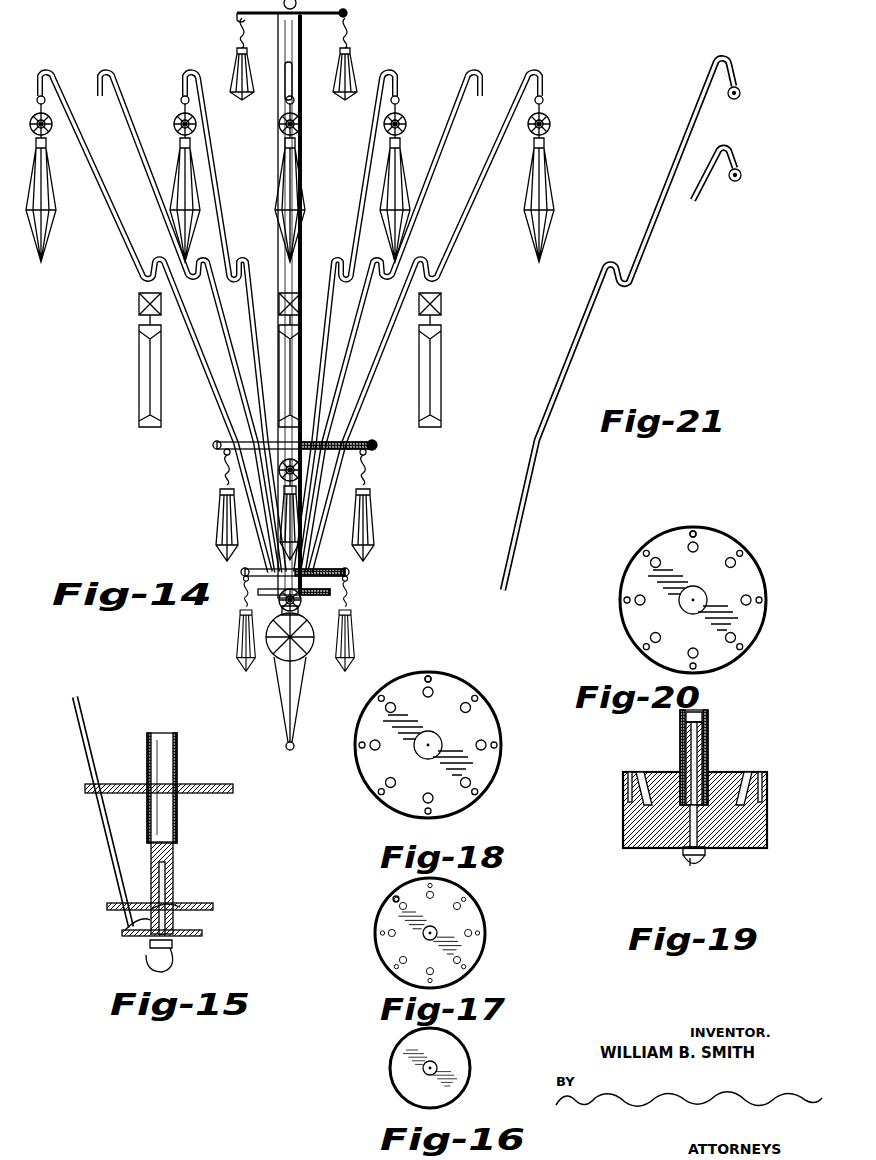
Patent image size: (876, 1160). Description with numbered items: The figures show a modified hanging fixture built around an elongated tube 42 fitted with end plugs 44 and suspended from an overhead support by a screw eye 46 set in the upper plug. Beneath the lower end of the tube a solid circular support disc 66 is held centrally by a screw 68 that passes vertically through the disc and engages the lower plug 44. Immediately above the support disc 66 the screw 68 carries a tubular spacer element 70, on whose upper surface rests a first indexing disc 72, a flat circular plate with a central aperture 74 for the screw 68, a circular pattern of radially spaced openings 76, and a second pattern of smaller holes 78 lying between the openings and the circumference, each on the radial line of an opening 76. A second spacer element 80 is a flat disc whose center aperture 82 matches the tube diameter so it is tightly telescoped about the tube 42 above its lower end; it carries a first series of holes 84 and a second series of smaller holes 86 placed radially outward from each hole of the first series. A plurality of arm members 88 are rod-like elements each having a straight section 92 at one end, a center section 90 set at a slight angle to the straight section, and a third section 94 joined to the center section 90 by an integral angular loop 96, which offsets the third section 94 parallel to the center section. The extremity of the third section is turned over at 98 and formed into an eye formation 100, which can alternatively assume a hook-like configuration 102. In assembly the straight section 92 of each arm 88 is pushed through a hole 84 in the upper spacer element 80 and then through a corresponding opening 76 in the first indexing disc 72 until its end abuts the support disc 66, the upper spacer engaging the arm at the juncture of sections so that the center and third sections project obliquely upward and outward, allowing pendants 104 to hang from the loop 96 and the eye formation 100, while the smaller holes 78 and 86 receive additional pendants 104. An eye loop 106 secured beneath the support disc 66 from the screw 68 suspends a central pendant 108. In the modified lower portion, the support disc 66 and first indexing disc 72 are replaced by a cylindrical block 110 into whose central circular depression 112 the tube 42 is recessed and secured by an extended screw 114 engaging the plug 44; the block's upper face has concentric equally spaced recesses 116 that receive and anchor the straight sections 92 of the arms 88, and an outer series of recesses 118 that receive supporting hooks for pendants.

In FIG. 14, the elongated tube 42 is at (300, 100).
In FIG. 15, the elongated tube 42 is at (178, 818).
In FIG. 14, the end plug 44 is at (282, 36).
In FIG. 15, the end plug 44 is at (178, 872).
In FIG. 19, the end plug 44 is at (708, 725).
In FIG. 14, the screw eye 46 is at (232, 8).
In FIG. 14, the support disc 66 is at (305, 603).
In FIG. 15, the support disc 66 is at (190, 930).
In FIG. 16, the support disc 66 is at (462, 1068).
In FIG. 15, the screw 68 is at (180, 907).
In FIG. 15, the tubular spacer element 70 is at (135, 922).
In FIG. 14, the first indexing disc 72 is at (348, 570).
In FIG. 15, the first indexing disc 72 is at (112, 897).
In FIG. 17, the first indexing disc 72 is at (470, 915).
In FIG. 17, the central aperture 74 is at (437, 938).
In FIG. 17, the openings 76 is at (462, 905).
In FIG. 17, the smaller holes 78 is at (392, 897).
In FIG. 14, the second spacer element 80 is at (377, 445).
In FIG. 15, the second spacer element 80 is at (225, 784).
In FIG. 18, the second spacer element 80 is at (480, 730).
In FIG. 18, the center aperture 82 is at (440, 752).
In FIG. 18, the holes 84 is at (470, 705).
In FIG. 18, the smaller holes 86 is at (432, 676).
In FIG. 14, the arm member 88 is at (372, 415).
In FIG. 15, the arm member 88 is at (103, 812).
In FIG. 21, the arm member 88 is at (530, 503).
In FIG. 21, the center section 90 is at (586, 332).
In FIG. 21, the straight section 92 is at (513, 558).
In FIG. 21, the third section 94 is at (676, 158).
In FIG. 21, the angular loop 96 is at (623, 275).
In FIG. 21, the turned-over portion 98 is at (728, 66).
In FIG. 21, the eye formation 100 is at (741, 93).
In FIG. 21, the hook-like configuration 102 is at (742, 175).
In FIG. 14, the pendant 104 is at (548, 165).
In FIG. 15, the eye loop 106 is at (180, 956).
In FIG. 14, the central pendant 108 is at (290, 720).
In FIG. 20, the cylindrical block 110 is at (677, 535).
In FIG. 19, the cylindrical block 110 is at (640, 832).
In FIG. 20, the central circular depression 112 is at (700, 588).
In FIG. 19, the central circular depression 112 is at (712, 770).
In FIG. 19, the extended screw 114 is at (700, 835).
In FIG. 20, the recesses 116 is at (735, 565).
In FIG. 19, the recesses 116 is at (655, 772).
In FIG. 20, the recesses 118 is at (697, 538).
In FIG. 19, the recesses 118 is at (768, 785).